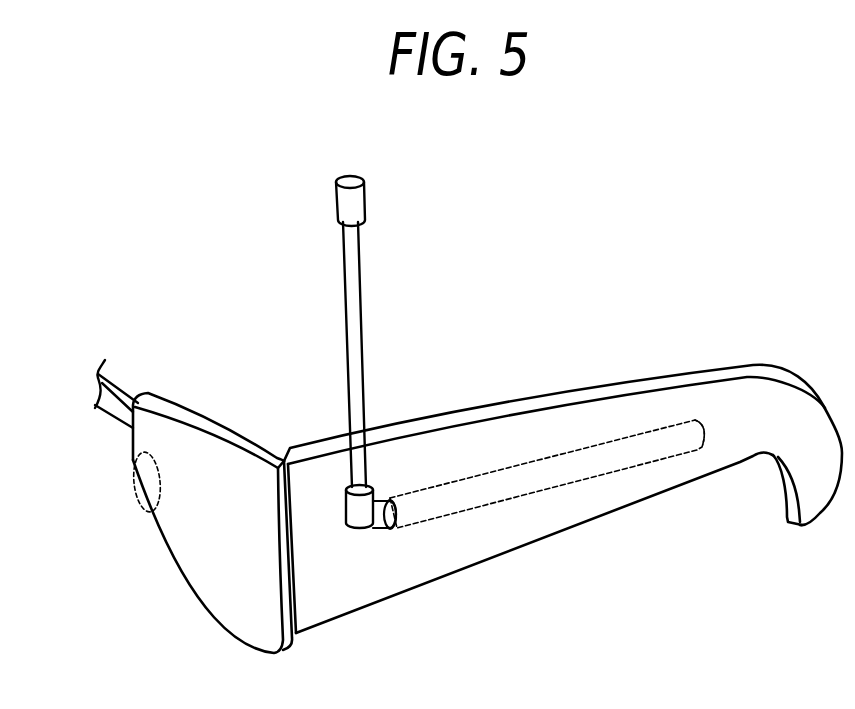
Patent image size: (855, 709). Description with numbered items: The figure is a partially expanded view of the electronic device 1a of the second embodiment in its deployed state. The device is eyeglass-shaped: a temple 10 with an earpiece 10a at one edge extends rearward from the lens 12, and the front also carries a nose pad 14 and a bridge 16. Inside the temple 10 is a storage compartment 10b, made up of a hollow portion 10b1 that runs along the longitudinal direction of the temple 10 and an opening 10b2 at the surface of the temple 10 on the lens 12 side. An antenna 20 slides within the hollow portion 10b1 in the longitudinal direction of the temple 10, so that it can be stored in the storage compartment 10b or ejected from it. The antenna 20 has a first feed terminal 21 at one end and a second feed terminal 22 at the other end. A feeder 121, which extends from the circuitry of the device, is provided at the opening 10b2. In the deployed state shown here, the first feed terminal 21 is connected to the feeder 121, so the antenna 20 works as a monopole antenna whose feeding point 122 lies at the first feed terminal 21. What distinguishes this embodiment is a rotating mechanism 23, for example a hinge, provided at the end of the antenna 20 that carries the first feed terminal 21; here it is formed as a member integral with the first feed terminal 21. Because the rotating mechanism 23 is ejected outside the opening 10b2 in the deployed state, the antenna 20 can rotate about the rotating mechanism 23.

The electronic device 1a is at (494, 252).
The temple 10 is at (607, 493).
The earpiece 10a is at (803, 415).
The storage compartment 10b is at (562, 454).
The hollow portion 10b1 is at (667, 438).
The opening 10b2 is at (390, 527).
The lens 12 is at (193, 553).
The nose pad 14 is at (143, 482).
The bridge 16 is at (112, 408).
The antenna 20 is at (348, 288).
The first feed terminal 21 is at (382, 523).
The second feed terminal 22 is at (342, 201).
The rotating mechanism 23 is at (345, 523).
The feeder 121 is at (395, 513).
The feeding point 122 is at (398, 515).